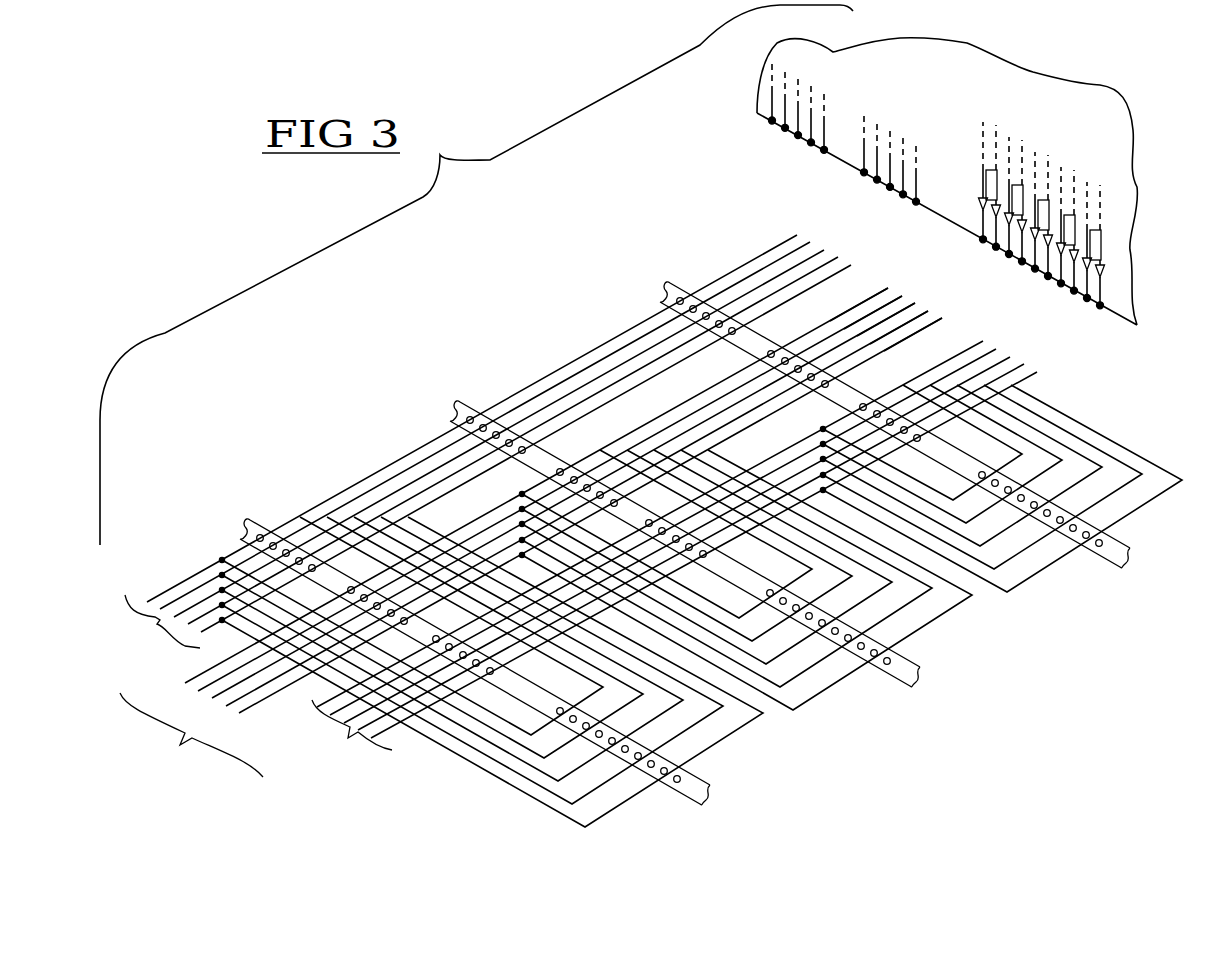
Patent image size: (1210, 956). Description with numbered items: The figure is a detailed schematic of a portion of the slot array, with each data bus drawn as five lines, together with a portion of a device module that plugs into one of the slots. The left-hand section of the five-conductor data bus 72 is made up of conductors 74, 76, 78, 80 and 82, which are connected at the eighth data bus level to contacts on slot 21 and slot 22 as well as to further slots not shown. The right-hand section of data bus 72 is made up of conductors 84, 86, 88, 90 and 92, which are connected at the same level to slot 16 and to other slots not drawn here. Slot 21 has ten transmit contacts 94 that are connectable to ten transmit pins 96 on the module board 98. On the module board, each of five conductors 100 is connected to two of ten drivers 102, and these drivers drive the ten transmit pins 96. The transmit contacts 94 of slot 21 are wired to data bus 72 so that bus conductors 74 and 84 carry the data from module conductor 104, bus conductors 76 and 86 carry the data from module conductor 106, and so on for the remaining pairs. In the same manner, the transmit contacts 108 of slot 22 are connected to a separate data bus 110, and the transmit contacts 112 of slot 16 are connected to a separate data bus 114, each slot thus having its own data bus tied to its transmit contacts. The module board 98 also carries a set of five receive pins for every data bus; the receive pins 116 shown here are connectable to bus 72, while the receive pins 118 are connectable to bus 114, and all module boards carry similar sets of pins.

The slot 16 is at (660, 296).
The slot 21 is at (452, 414).
The slot 22 is at (242, 530).
The five-conductor data bus 72 is at (191, 735).
The conductor 74 is at (237, 655).
The conductor 76 is at (263, 660).
The conductor 78 is at (272, 665).
The conductor 80 is at (287, 673).
The conductor 82 is at (300, 680).
The conductor 84 is at (888, 288).
The conductor 86 is at (902, 297).
The conductor 88 is at (915, 305).
The conductor 90 is at (928, 313).
The conductor 92 is at (942, 322).
The transmit contacts 94 is at (897, 700).
The transmit pins 96 is at (1009, 226).
The module board 98 is at (1143, 228).
The conductors 100 is at (976, 120).
The drivers 102 is at (972, 188).
The module conductor 104 is at (990, 168).
The module conductor 106 is at (1014, 183).
The transmit contacts 108 is at (692, 808).
The data bus 110 is at (148, 621).
The transmit contacts 112 is at (1107, 580).
The data bus 114 is at (352, 738).
The receive pins 116 is at (783, 145).
The receive pins 118 is at (872, 190).